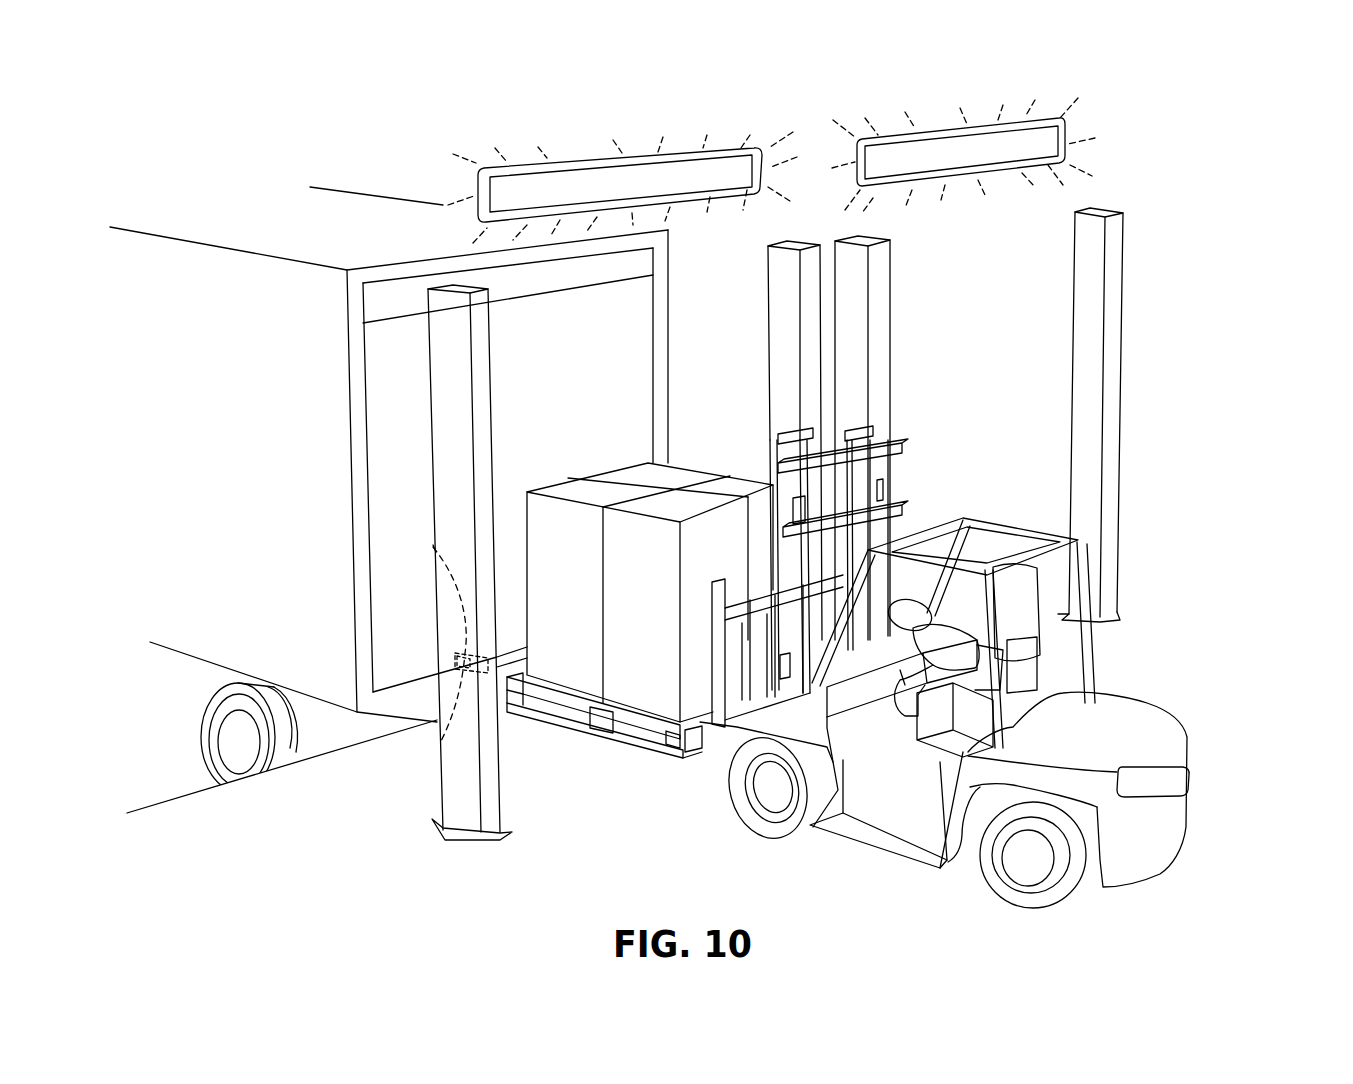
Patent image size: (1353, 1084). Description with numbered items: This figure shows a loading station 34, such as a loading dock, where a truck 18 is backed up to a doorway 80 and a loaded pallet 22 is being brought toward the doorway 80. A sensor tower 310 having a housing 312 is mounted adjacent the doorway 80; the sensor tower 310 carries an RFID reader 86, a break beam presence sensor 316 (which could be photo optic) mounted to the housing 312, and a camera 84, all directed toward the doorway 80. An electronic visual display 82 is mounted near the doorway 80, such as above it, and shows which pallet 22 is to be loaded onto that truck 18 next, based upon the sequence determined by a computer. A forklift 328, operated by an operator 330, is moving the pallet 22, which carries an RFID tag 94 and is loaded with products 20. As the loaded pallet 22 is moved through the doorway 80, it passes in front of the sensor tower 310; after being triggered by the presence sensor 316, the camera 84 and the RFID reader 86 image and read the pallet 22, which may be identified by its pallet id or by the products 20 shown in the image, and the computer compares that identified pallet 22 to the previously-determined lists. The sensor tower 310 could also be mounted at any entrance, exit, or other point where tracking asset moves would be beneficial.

The truck 18 is at (372, 190).
The electronic visual display 82 is at (603, 155).
The sensor tower 310 is at (497, 392).
The housing 312 is at (491, 447).
The doorway 80 is at (770, 338).
The loading station 34 is at (1219, 417).
The products 20 is at (680, 463).
The pallet 22 is at (603, 736).
The RFID tag 94 is at (672, 745).
The camera 84 is at (457, 657).
The RFID reader 86 is at (440, 748).
The presence sensor 316 is at (433, 557).
The forklift 328 is at (1188, 798).
The operator 330 is at (1020, 615).